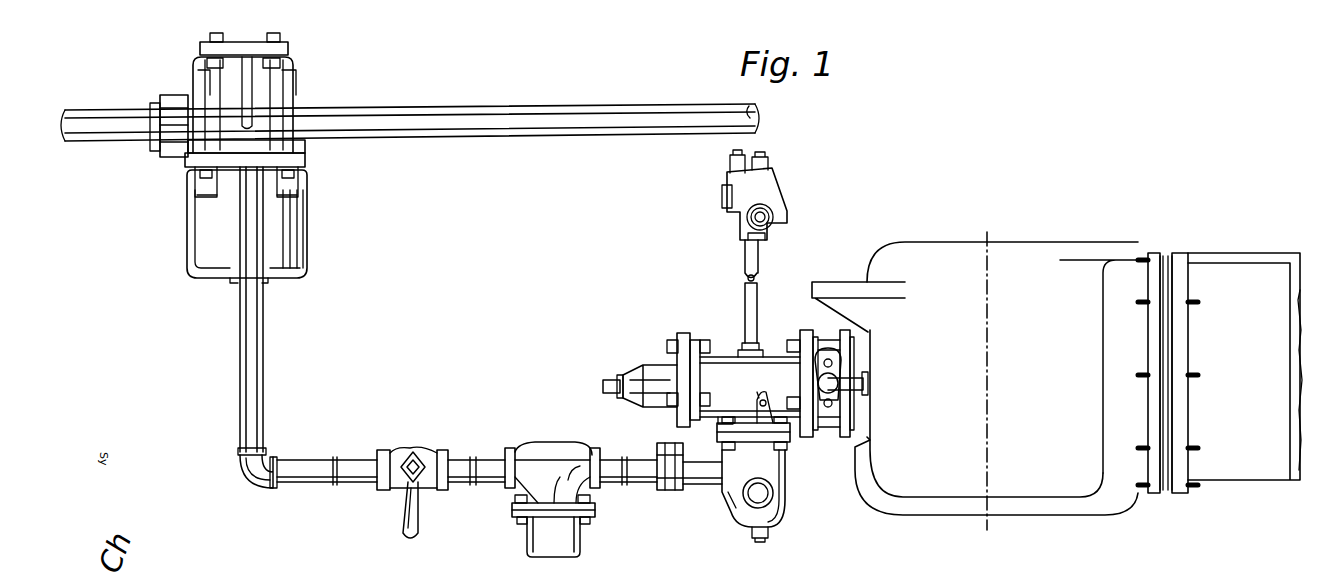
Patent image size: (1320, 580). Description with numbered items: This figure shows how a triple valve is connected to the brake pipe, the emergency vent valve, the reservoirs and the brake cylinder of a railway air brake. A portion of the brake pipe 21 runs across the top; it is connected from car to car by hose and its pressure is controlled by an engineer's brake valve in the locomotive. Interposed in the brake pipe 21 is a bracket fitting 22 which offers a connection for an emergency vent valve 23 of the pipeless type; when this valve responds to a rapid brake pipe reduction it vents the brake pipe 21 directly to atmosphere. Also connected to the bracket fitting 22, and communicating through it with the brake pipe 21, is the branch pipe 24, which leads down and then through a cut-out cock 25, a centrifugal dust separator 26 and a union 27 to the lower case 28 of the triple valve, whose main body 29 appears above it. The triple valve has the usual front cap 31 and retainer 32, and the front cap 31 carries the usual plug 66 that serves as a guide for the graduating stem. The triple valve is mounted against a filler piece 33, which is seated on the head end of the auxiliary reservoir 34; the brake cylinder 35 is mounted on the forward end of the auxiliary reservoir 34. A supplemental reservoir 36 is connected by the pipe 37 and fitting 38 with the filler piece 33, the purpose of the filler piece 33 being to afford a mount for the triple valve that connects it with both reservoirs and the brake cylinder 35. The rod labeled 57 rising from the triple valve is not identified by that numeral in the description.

The brake pipe 21 is at (447, 135).
The bracket fitting 22 is at (277, 78).
The emergency vent valve 23 is at (195, 235).
The branch pipe 24 is at (264, 352).
The cut-out cock 25 is at (395, 450).
The centrifugal dust separator 26 is at (550, 446).
The union 27 is at (672, 482).
The lower case 28 is at (775, 467).
The main body 29 is at (777, 355).
The front cap 31 is at (646, 366).
The retainer 32 is at (762, 180).
The filler piece 33 is at (830, 343).
The auxiliary reservoir 34 is at (862, 473).
The brake cylinder 35 is at (1197, 258).
The supplemental reservoir 36 is at (1053, 498).
The pipe 37 is at (854, 380).
The fitting 38 is at (842, 413).
The operating rod 57 is at (722, 312).
The plug 66 is at (605, 384).